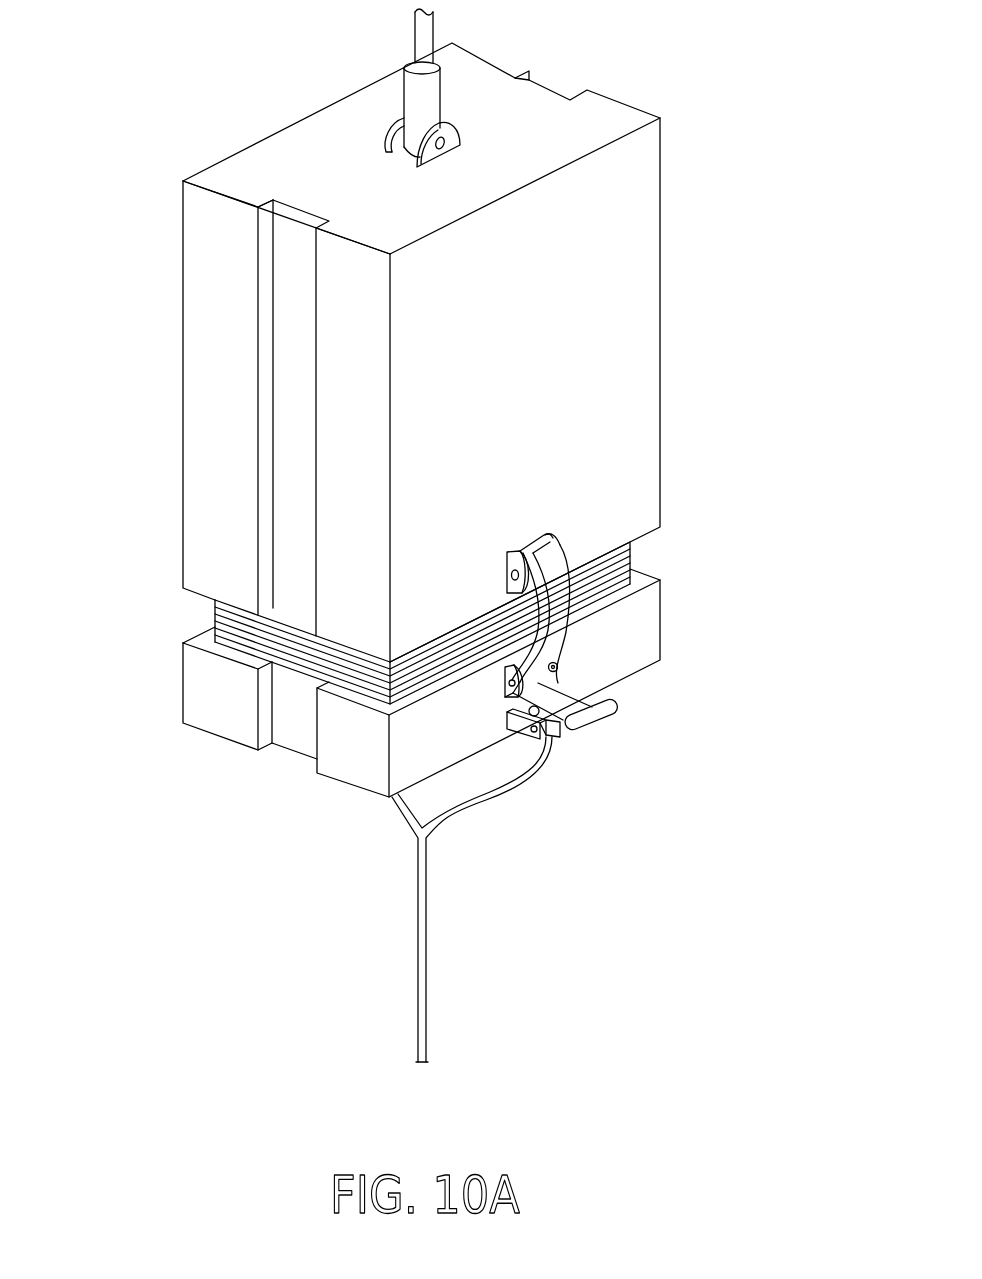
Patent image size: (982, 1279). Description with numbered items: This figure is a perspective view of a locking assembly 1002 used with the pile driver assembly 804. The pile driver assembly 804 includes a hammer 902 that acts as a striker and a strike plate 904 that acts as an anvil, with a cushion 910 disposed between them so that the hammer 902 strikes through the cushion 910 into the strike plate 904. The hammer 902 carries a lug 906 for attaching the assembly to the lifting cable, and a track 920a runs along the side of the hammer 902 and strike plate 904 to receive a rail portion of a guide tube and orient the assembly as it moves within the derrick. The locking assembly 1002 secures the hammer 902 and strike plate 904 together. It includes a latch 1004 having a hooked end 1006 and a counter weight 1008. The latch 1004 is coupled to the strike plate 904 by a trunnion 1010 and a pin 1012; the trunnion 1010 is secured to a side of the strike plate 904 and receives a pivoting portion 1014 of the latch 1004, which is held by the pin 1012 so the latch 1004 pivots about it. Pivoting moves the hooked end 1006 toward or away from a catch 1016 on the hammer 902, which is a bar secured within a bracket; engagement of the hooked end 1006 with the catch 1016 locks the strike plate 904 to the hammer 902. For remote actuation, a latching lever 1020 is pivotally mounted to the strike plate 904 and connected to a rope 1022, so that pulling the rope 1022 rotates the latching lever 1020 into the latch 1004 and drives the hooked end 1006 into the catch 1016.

The pile driver assembly 804 is at (704, 158).
The hammer 902 is at (400, 352).
The strike plate 904 is at (650, 600).
The lug 906 is at (395, 130).
The cushion 910 is at (231, 622).
The track 920a is at (293, 257).
The locking assembly 1002 is at (590, 736).
The latch 1004 is at (543, 684).
The hooked end 1006 is at (538, 549).
The counter weight 1008 is at (598, 716).
The trunnion 1010 is at (503, 672).
The pin 1012 is at (505, 700).
The pivoting portion 1014 is at (553, 660).
The catch 1016 is at (500, 573).
The latching lever 1020 is at (553, 728).
The rope 1022 is at (427, 943).